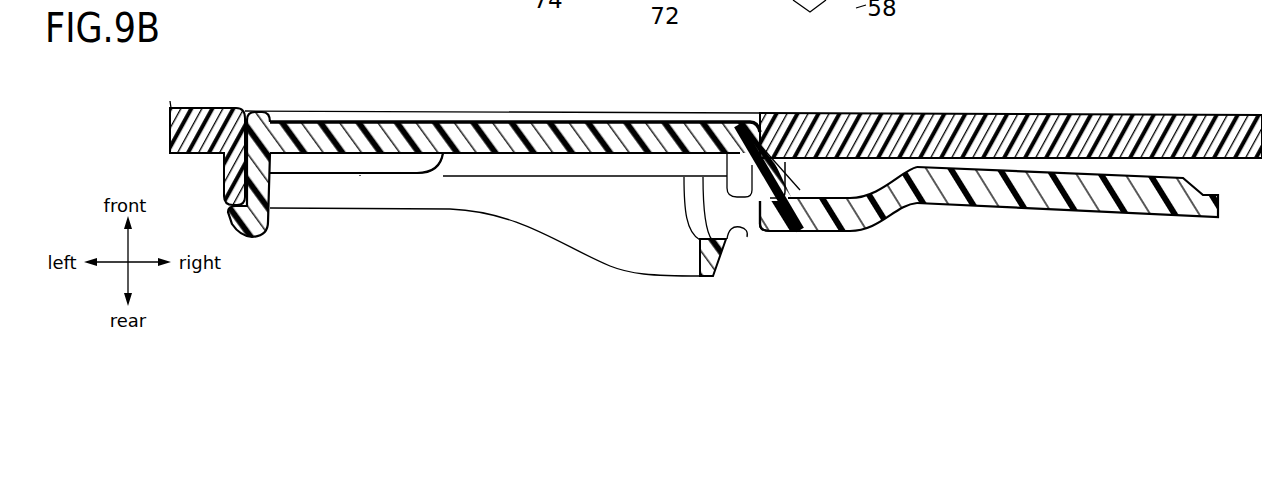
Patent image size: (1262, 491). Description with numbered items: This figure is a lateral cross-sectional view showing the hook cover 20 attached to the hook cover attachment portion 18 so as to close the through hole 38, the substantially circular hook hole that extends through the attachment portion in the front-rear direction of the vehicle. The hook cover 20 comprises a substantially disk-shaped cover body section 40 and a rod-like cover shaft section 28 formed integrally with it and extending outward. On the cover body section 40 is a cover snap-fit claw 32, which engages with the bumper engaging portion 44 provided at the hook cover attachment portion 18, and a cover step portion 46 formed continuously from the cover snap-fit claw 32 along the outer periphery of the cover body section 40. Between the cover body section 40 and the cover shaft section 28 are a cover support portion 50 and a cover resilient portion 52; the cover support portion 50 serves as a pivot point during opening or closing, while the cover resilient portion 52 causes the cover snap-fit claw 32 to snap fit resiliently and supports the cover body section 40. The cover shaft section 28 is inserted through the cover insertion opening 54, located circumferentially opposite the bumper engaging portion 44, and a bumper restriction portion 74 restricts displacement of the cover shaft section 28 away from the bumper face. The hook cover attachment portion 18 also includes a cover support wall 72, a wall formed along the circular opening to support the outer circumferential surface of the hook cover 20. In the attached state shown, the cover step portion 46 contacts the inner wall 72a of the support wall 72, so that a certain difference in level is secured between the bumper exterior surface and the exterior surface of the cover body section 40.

The hook cover attachment portion 18 is at (956, 113).
The hook cover 20 is at (870, 235).
The cover shaft section 28 is at (1085, 213).
The cover snap-fit claw 32 is at (263, 240).
The through hole 38 is at (754, 124).
The cover body section 40 is at (578, 121).
The bumper engaging portion 44 is at (224, 176).
The cover step portion 46 is at (360, 175).
The cover support portion 50 is at (790, 166).
The cover resilient portion 52 is at (808, 232).
The cover insertion opening 54 is at (747, 237).
The cover support wall 72 is at (442, 190).
The inner wall 72a is at (503, 176).
The bumper restriction portion 74 is at (715, 277).